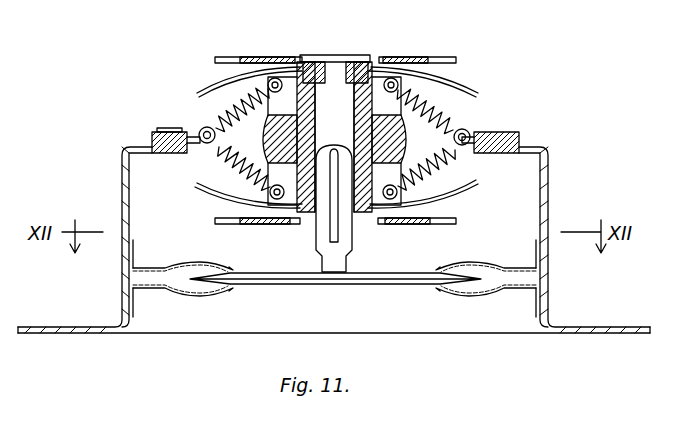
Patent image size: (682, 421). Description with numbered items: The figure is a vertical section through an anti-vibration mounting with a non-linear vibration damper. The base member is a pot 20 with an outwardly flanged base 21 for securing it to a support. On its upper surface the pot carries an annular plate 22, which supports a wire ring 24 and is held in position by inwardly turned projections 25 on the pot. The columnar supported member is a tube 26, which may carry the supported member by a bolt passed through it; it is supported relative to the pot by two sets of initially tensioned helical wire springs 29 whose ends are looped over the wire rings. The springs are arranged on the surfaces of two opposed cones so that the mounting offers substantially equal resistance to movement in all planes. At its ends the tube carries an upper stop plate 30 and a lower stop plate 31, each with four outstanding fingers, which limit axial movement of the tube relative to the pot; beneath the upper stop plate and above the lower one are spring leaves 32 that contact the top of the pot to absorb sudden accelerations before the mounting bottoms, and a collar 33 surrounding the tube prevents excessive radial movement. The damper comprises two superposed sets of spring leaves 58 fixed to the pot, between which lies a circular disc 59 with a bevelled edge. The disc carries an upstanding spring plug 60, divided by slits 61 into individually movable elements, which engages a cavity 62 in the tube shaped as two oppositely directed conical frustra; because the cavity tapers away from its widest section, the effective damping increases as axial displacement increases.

The pot 20 is at (122, 167).
The outwardly flanged base 21 is at (40, 327).
The annular plate 22 is at (153, 138).
The wire ring 24 is at (471, 130).
The inwardly turned projections 25 is at (159, 130).
The tube 26 is at (317, 62).
The helical wire springs 29 is at (216, 112).
The upper stop plate 30 is at (267, 57).
The lower stop plate 31 is at (411, 226).
The spring leaves 32 is at (213, 84).
The collar 33 is at (213, 193).
The spring leaves 58 is at (183, 264).
The circular disc 59 is at (275, 284).
The spring plug 60 is at (322, 248).
The slits 61 is at (337, 148).
The cavity 62 is at (366, 60).